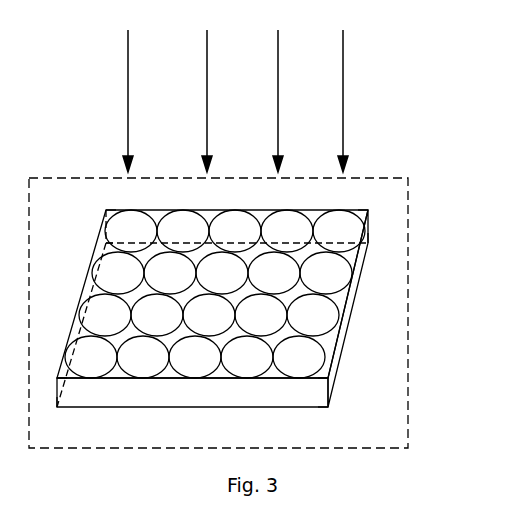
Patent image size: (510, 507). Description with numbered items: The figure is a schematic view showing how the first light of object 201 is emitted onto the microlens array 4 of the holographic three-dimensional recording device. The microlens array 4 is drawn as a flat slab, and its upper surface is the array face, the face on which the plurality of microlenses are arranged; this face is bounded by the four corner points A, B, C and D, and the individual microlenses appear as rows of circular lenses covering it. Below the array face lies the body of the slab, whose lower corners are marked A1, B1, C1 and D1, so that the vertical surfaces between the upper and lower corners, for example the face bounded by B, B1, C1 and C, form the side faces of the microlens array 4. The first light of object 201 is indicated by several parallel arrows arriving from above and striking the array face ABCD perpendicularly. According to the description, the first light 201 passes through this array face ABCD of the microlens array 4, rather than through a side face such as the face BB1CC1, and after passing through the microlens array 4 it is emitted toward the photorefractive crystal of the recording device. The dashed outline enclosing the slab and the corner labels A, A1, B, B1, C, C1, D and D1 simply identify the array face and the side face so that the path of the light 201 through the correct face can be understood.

The first light of object 201 is at (343, 98).
The microlens array 4 is at (244, 313).
The vertex A of array face A is at (105, 202).
The vertex A1 of side face A1 is at (92, 243).
The vertex B of array face B is at (53, 378).
The vertex B1 of side face B1 is at (47, 414).
The vertex C of array face C is at (335, 375).
The vertex C1 of side face C1 is at (334, 420).
The vertex D of array face D is at (374, 205).
The vertex D1 of side face D1 is at (383, 247).